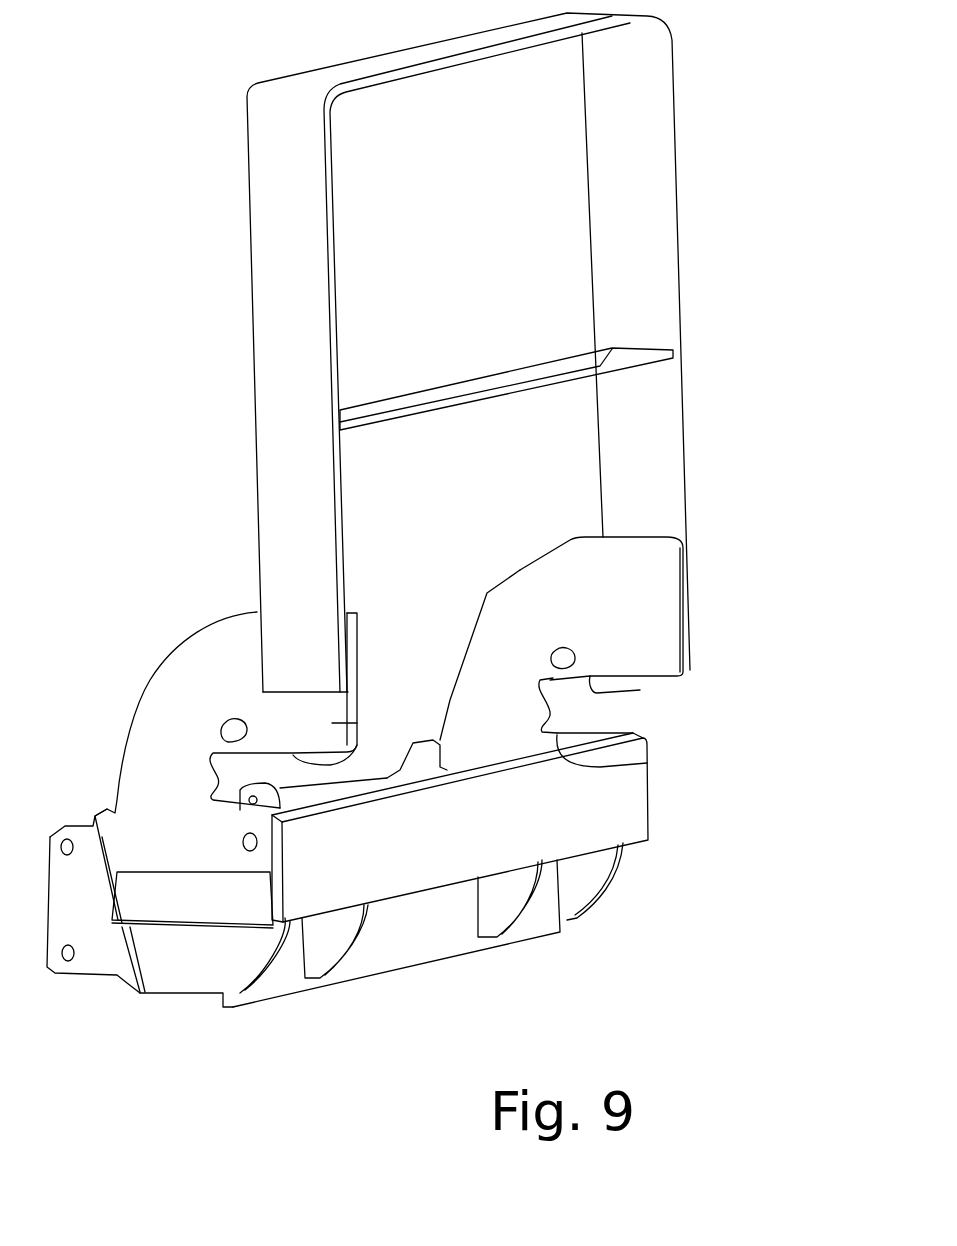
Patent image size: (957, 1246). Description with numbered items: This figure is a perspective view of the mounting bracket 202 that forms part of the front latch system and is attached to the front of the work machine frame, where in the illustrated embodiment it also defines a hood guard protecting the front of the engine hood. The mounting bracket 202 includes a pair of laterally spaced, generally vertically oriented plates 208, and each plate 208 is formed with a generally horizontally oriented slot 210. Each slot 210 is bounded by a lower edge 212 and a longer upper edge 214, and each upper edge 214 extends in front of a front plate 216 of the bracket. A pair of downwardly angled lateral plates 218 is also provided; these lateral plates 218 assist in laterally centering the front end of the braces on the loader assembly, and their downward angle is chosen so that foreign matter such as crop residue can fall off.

The mounting bracket 202 is at (140, 568).
The plates 208 is at (300, 755).
The slot 210 is at (272, 765).
The lower edge 212 is at (208, 800).
The upper edge 214 is at (300, 767).
The front plate 216 is at (620, 817).
The lateral plates 218 is at (197, 898).